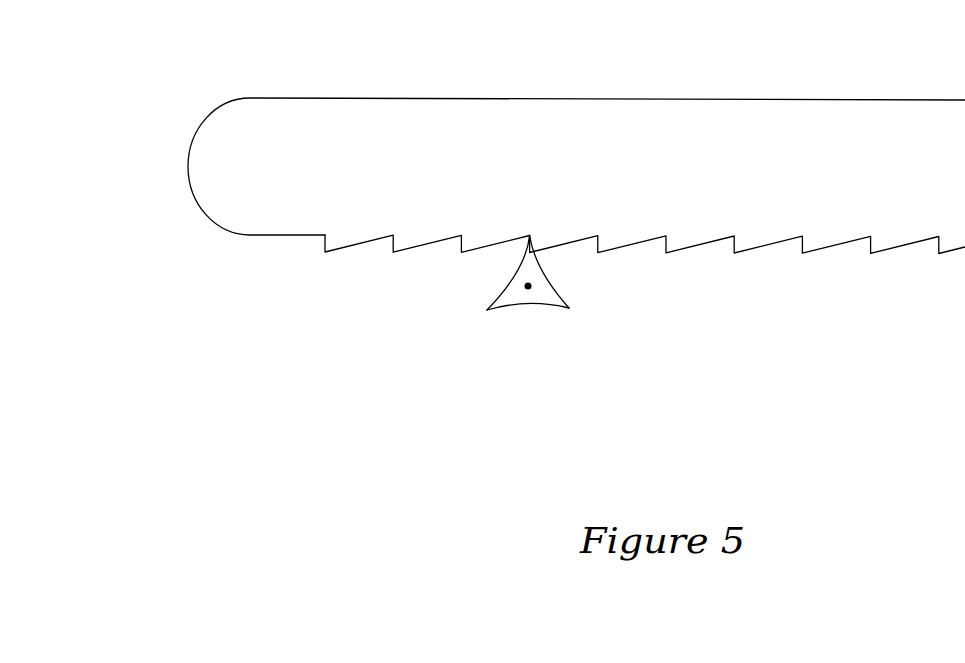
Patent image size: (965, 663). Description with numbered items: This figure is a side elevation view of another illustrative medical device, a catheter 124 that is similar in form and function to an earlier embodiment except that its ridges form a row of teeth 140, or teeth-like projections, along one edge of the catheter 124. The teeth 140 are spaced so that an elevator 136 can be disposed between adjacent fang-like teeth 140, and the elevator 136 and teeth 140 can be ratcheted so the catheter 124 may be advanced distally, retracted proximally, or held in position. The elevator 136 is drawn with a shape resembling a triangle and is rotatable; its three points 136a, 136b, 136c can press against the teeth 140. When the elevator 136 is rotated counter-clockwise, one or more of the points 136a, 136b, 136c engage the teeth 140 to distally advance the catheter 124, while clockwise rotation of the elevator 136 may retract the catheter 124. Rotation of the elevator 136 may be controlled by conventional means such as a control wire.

The catheter 124 is at (508, 126).
The teeth 140 is at (673, 242).
The elevator 136 is at (525, 301).
The point 136a is at (527, 238).
The point 136b is at (487, 309).
The point 136c is at (569, 309).